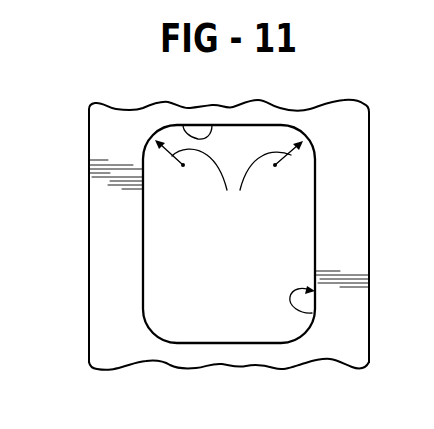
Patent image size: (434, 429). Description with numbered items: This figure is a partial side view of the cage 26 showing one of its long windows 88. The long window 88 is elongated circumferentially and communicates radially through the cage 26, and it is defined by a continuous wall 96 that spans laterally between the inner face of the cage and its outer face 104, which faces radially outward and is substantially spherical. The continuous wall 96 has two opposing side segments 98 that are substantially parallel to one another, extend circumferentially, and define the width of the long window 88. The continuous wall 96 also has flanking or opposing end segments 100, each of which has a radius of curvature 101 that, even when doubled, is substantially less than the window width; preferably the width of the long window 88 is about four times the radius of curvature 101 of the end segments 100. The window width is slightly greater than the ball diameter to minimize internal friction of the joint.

The cage 26 is at (79, 83).
The long window 88 is at (241, 259).
The continuous wall 96 is at (312, 313).
The side segments 98 is at (143, 198).
The end segments 100 is at (212, 125).
The radius of curvature 101 is at (229, 176).
The outer face 104 is at (105, 313).